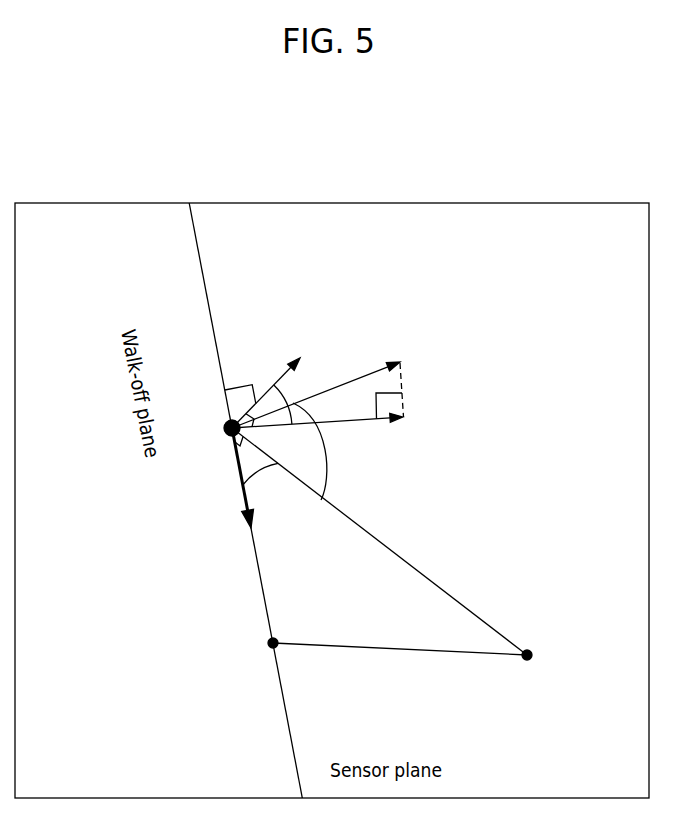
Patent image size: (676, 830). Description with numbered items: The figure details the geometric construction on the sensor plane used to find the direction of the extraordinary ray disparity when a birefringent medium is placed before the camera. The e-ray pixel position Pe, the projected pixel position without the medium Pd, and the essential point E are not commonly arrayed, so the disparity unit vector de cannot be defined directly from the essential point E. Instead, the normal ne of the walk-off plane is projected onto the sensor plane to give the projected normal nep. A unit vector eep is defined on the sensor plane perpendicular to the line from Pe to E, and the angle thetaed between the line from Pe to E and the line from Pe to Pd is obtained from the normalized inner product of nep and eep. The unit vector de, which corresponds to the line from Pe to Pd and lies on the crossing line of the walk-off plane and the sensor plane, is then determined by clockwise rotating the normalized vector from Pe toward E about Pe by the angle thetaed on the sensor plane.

The e-ray pixel position Pe is at (214, 434).
The projected pixel position without the birefringent medium Pd is at (263, 658).
The essential point E is at (391, 549).
The unit vector perpendicular to line PeE on the sensor plane eep is at (266, 373).
The normal of the walk-off plane ne is at (330, 384).
The projected normal of the walk-off plane on the sensor plane nep is at (334, 418).
The unit vector of the extraordinary ray disparity de is at (230, 478).
The angle between lines PeE and PePd thetaed is at (263, 480).